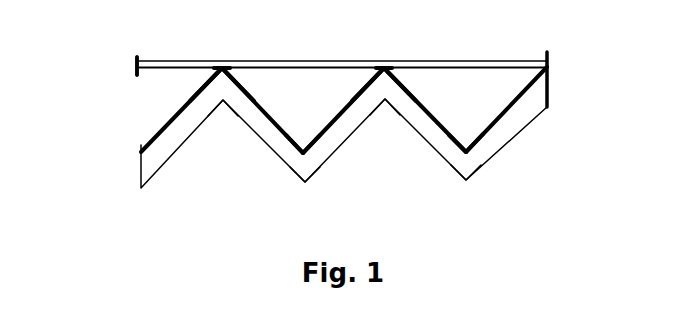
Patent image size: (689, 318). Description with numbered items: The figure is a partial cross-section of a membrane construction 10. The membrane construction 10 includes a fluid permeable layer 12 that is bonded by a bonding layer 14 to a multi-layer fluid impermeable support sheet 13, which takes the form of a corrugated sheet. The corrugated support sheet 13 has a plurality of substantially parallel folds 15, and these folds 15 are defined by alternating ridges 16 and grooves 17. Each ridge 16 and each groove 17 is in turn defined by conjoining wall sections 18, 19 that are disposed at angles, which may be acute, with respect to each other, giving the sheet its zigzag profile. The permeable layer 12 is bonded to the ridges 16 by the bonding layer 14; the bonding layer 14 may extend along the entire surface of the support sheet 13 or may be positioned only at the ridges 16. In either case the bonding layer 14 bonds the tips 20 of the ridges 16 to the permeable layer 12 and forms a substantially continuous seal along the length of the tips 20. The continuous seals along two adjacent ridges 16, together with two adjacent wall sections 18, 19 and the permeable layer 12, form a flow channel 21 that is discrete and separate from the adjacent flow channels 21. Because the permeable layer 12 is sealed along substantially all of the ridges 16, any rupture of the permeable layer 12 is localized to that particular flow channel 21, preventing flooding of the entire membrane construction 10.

The membrane construction 10 is at (112, 56).
The fluid permeable layer 12 is at (510, 54).
The multi-layer fluid impermeable support sheet 13 is at (512, 157).
The bonding layer 14 is at (206, 72).
The folds 15 is at (222, 120).
The ridges 16 is at (231, 74).
The grooves 17 is at (293, 162).
The wall section 18 is at (256, 112).
The wall section 19 is at (178, 121).
The tips 20 is at (223, 72).
The flow channel 21 is at (308, 135).